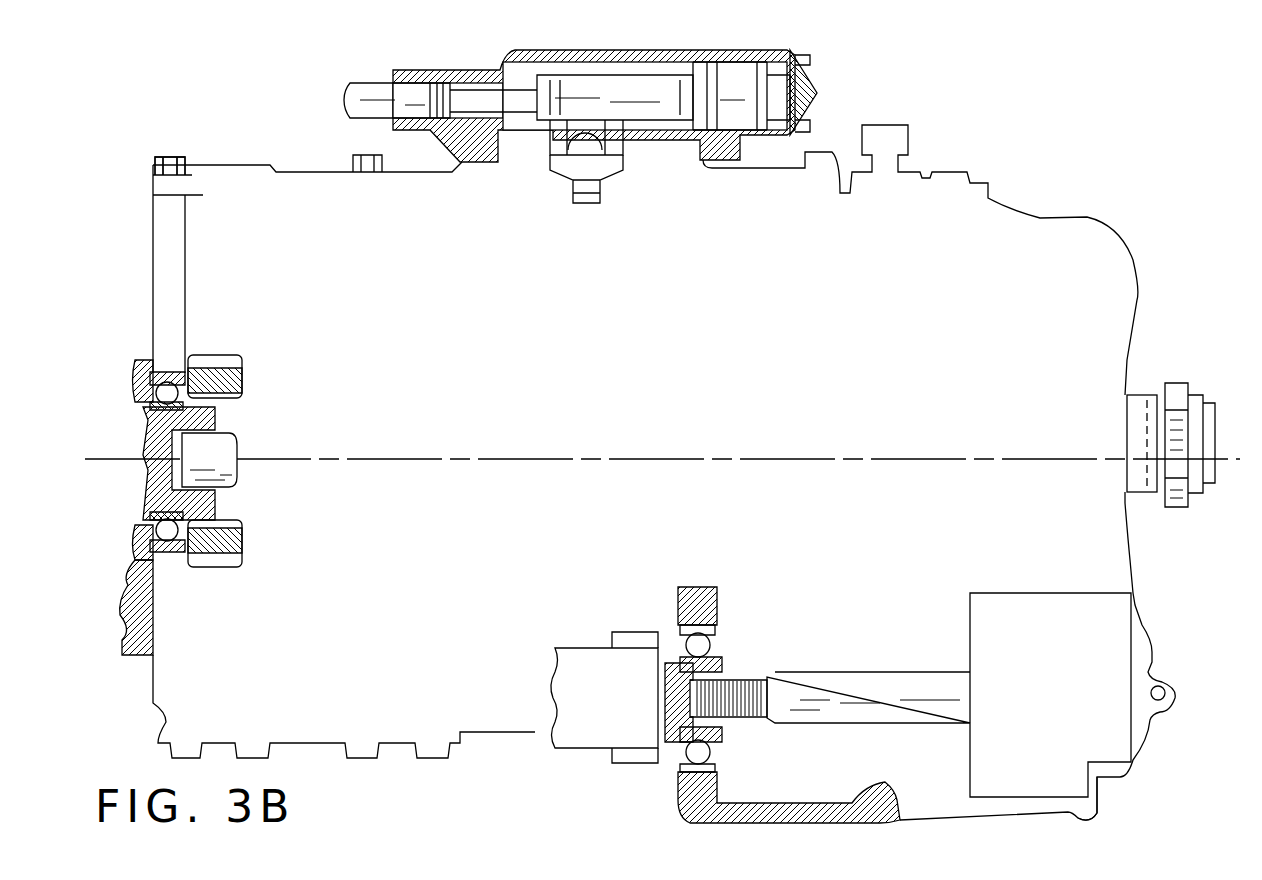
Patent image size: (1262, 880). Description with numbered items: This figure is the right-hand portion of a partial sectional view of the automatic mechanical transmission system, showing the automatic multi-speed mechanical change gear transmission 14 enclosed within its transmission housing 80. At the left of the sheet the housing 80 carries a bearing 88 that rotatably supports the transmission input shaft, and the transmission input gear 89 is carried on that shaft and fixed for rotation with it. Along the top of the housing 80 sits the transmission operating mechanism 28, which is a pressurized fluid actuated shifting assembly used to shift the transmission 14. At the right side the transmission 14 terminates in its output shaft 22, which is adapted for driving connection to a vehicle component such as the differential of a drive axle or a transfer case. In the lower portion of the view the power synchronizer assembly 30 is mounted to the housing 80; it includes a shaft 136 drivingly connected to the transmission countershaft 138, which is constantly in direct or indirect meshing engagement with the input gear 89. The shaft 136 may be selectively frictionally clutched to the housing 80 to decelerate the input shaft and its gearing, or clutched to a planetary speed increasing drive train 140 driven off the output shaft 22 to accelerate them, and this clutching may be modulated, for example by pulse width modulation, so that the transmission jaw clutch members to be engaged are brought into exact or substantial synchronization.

The automatic multi-speed mechanical change gear transmission 14 is at (662, 474).
The output shaft 22 is at (1158, 395).
The transmission operating mechanism 28 is at (833, 78).
The power synchronizer assembly 30 is at (964, 624).
The transmission housing 80 is at (168, 185).
The bearing 88 is at (167, 542).
The transmission input gear 89 is at (215, 380).
The shaft 136 is at (825, 690).
The transmission countershaft 138 is at (597, 668).
The planetary speed increasing drive train 140 is at (1100, 816).